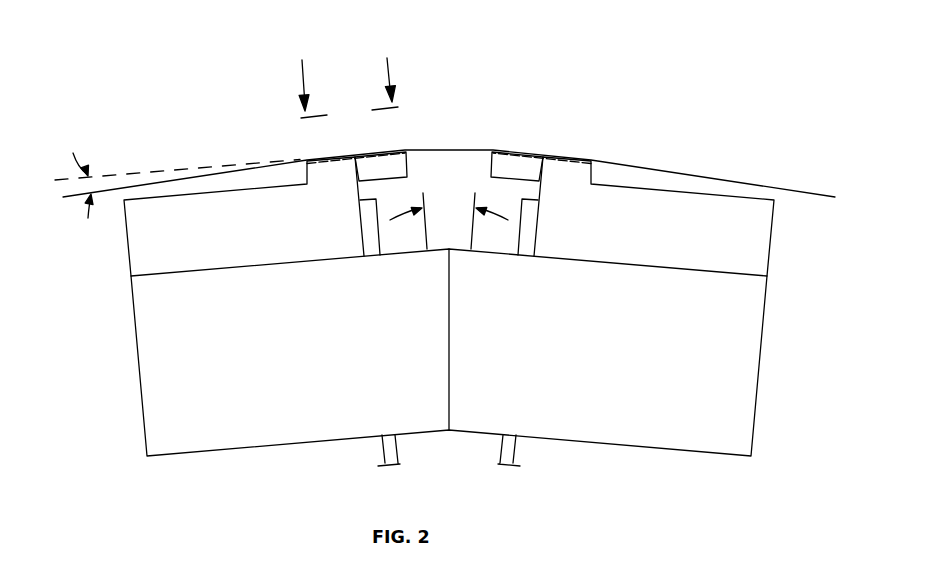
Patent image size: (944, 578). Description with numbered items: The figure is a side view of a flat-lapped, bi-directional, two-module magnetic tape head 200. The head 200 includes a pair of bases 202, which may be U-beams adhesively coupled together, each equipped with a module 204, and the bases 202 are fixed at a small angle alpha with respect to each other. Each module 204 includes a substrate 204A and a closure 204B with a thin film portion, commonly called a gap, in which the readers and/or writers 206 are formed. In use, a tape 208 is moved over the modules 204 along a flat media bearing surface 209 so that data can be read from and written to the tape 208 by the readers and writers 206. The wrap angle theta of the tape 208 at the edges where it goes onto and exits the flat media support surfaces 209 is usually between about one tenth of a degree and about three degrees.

The two-module magnetic tape head 200 is at (184, 119).
The base 202 is at (133, 345).
The module 204 is at (452, 197).
The substrate 204A is at (188, 222).
The closure 204B is at (494, 166).
The readers and/or writers 206 is at (358, 153).
The tape 208 is at (688, 172).
The media bearing surface 209 is at (314, 156).